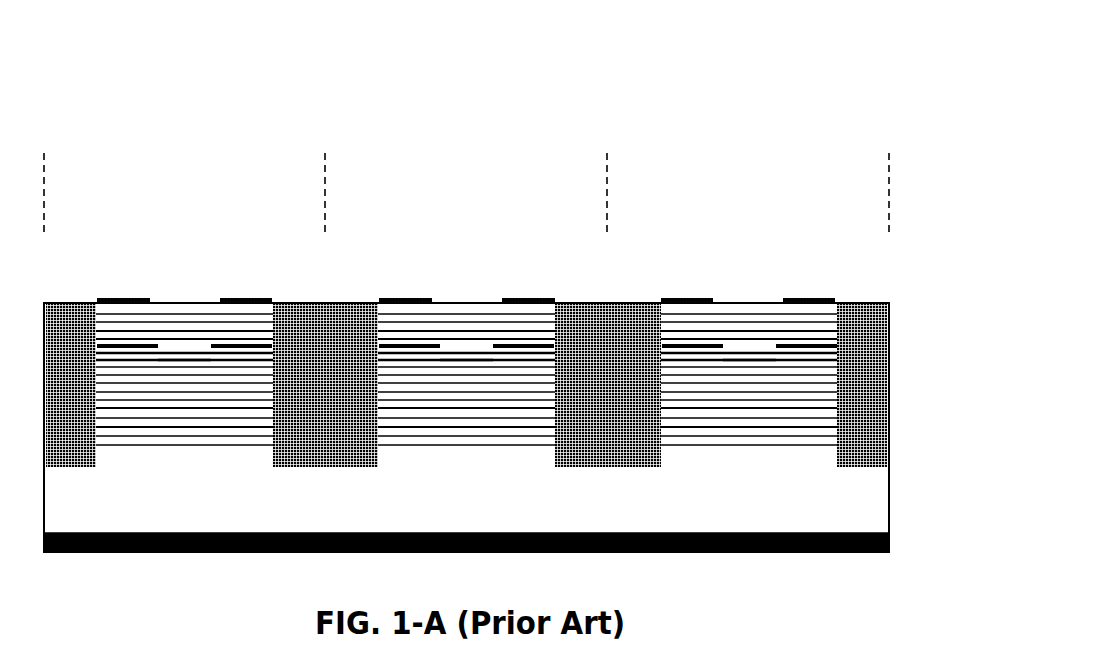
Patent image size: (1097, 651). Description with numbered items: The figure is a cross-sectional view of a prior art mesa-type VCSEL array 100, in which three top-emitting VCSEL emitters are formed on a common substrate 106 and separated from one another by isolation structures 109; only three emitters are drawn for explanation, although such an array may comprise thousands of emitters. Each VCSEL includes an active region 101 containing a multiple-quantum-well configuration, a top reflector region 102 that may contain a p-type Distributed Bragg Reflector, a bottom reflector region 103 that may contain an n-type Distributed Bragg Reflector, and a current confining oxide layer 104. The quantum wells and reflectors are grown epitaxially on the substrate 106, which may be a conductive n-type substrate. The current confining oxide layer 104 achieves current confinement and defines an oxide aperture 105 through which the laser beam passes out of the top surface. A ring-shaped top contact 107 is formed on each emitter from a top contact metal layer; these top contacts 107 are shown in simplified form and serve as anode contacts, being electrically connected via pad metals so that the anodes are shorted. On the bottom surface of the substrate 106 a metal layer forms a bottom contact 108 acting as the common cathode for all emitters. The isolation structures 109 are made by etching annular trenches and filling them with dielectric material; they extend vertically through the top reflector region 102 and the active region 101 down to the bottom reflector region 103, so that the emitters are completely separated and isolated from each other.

The VCSEL array 100 is at (872, 72).
The active region 101 is at (271, 360).
The top reflector region 102 is at (147, 328).
The bottom reflector region 103 is at (233, 390).
The current confining oxide layer 104 is at (247, 343).
The oxide aperture 105 is at (184, 356).
The substrate 106 is at (870, 510).
The top contact 107 is at (112, 298).
The bottom contact 108 is at (663, 552).
The isolation structure 109 is at (70, 445).